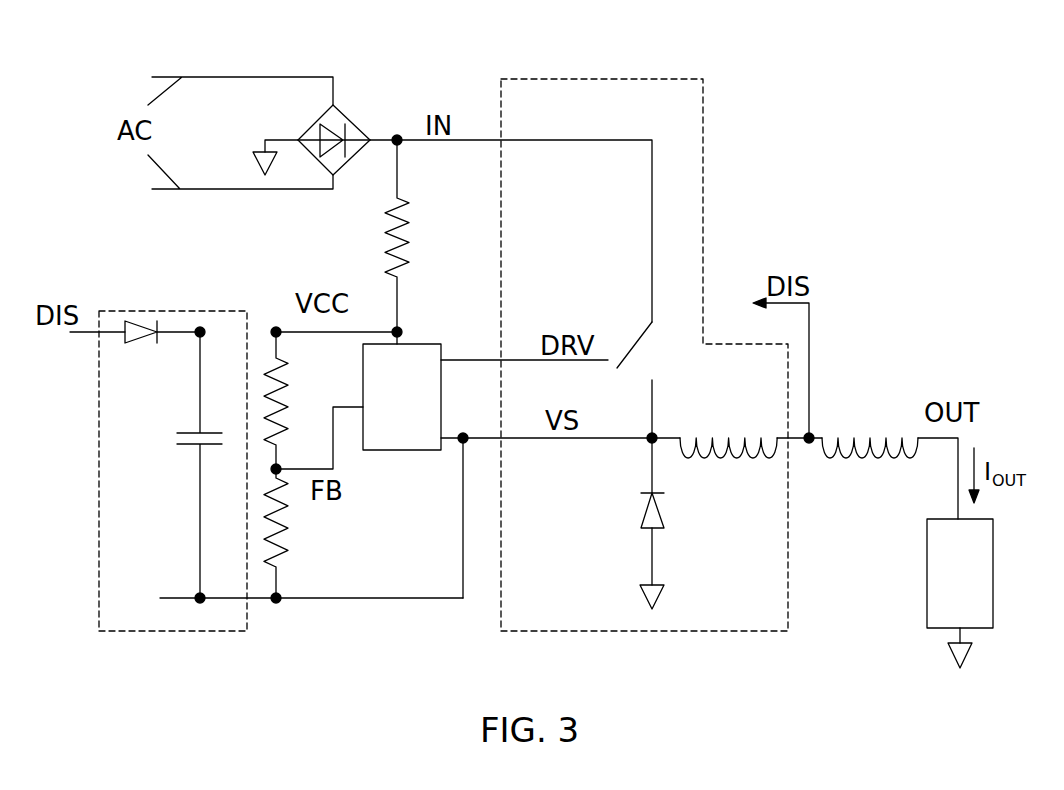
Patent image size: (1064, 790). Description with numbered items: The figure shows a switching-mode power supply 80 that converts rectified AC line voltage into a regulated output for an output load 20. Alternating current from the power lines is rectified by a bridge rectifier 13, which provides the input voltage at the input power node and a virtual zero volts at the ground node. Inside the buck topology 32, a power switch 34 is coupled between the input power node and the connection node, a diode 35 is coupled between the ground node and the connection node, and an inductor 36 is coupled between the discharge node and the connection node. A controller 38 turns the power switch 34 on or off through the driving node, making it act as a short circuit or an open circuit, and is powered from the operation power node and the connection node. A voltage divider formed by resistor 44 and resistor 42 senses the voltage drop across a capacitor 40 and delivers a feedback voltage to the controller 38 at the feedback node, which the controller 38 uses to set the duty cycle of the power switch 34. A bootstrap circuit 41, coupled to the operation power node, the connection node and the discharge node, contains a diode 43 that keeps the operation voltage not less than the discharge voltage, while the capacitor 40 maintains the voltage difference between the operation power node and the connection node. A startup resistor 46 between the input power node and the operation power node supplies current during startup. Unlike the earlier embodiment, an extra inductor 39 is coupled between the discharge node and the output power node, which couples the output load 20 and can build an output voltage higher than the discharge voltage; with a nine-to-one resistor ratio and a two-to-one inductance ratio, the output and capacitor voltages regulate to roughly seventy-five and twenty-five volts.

The bridge rectifier 13 is at (316, 118).
The switching-mode power supply 80 is at (452, 48).
The buck topology 32 is at (590, 79).
The startup resistor 46 is at (385, 198).
The diode 43 is at (148, 321).
The bootstrap circuit 41 is at (230, 311).
The capacitor 40 is at (175, 442).
The resistor 44 is at (286, 413).
The resistor 42 is at (290, 522).
The controller 38 is at (389, 413).
The power switch 34 is at (655, 352).
The diode 35 is at (641, 516).
The inductor 36 is at (752, 463).
The inductor 39 is at (893, 463).
The output load 20 is at (946, 599).